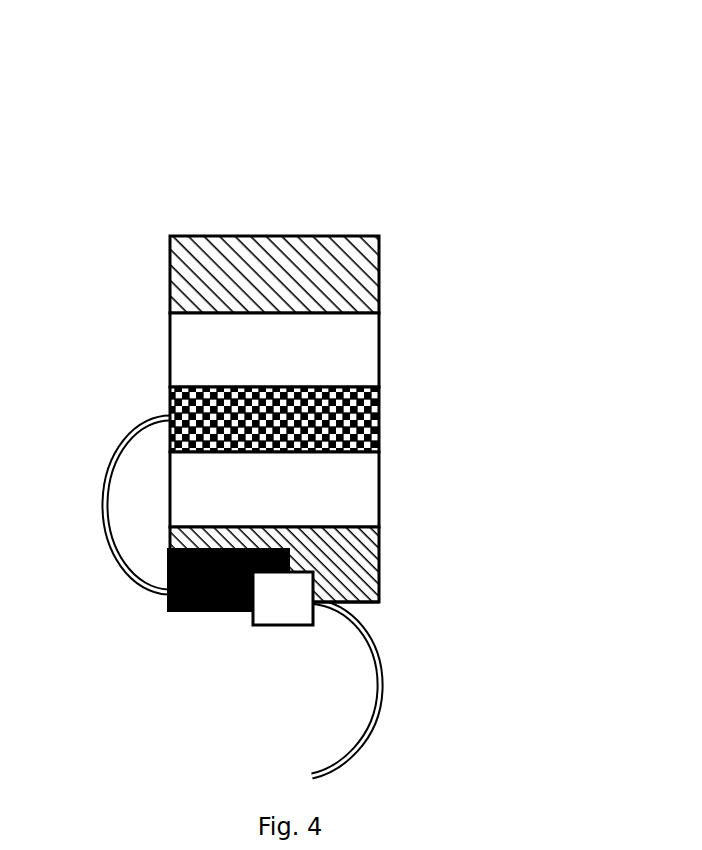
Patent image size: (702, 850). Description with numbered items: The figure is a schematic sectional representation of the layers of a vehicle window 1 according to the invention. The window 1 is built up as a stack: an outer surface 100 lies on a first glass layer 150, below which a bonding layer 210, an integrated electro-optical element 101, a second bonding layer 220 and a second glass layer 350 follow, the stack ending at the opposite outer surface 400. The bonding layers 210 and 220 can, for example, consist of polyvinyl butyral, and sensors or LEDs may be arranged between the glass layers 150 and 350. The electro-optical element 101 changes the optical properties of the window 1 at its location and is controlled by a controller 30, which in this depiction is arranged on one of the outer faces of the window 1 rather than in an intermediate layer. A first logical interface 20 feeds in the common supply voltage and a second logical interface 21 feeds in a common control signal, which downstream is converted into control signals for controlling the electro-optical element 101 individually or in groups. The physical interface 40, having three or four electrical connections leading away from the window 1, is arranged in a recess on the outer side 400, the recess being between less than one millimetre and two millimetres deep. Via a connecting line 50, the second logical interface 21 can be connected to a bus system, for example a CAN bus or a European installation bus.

The vehicle window 1 is at (516, 67).
The outer surface 100 is at (277, 222).
The glass layer 150 is at (394, 259).
The bonding layer 210 is at (274, 350).
The electro-optical element 101 is at (393, 400).
The bonding layer 220 is at (274, 489).
The glass layer 350 is at (396, 548).
The outer surface 400 is at (392, 613).
The controller 30 is at (228, 580).
The physical interface 40 is at (283, 598).
The connecting line 50 is at (345, 688).
The logical interface, power supply 20 is at (102, 505).
The logical interface, control 21 is at (138, 505).